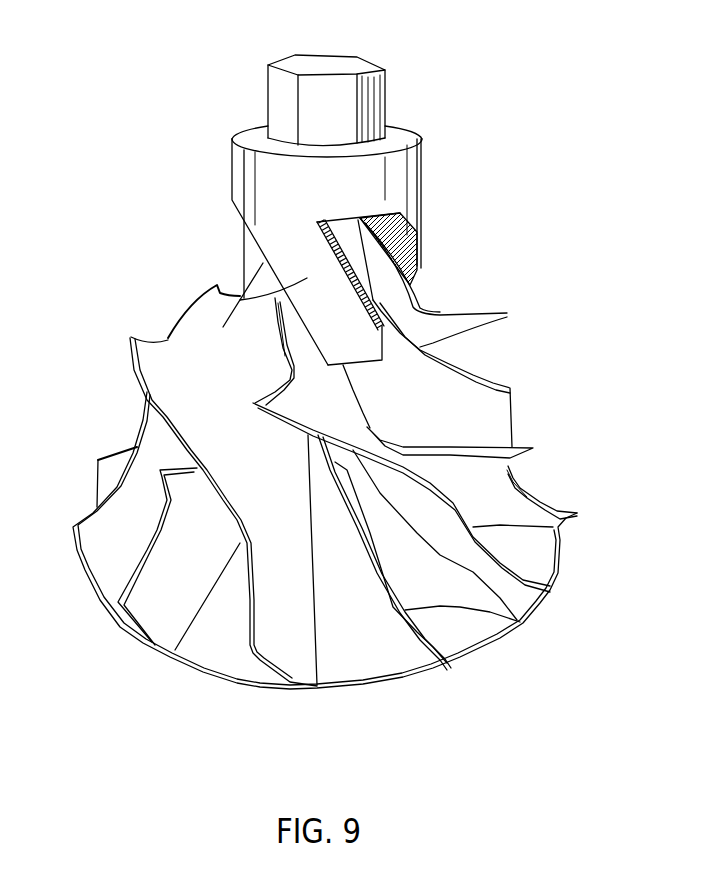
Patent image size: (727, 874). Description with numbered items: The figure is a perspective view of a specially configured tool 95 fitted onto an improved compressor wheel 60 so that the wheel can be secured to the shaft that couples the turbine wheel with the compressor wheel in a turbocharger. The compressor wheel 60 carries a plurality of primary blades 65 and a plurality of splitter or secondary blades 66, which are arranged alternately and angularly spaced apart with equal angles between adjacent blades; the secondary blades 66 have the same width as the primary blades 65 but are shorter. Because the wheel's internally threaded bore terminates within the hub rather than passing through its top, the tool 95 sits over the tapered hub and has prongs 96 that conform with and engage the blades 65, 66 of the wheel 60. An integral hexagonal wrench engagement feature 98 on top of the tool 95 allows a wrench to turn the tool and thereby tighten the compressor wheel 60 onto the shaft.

The compressor wheel 60 is at (516, 382).
The primary blades 65 is at (208, 377).
The secondary blades 66 is at (108, 473).
The tool 95 is at (431, 160).
The prongs 96 is at (250, 254).
The hexagonal wrench engagement feature 98 is at (278, 87).